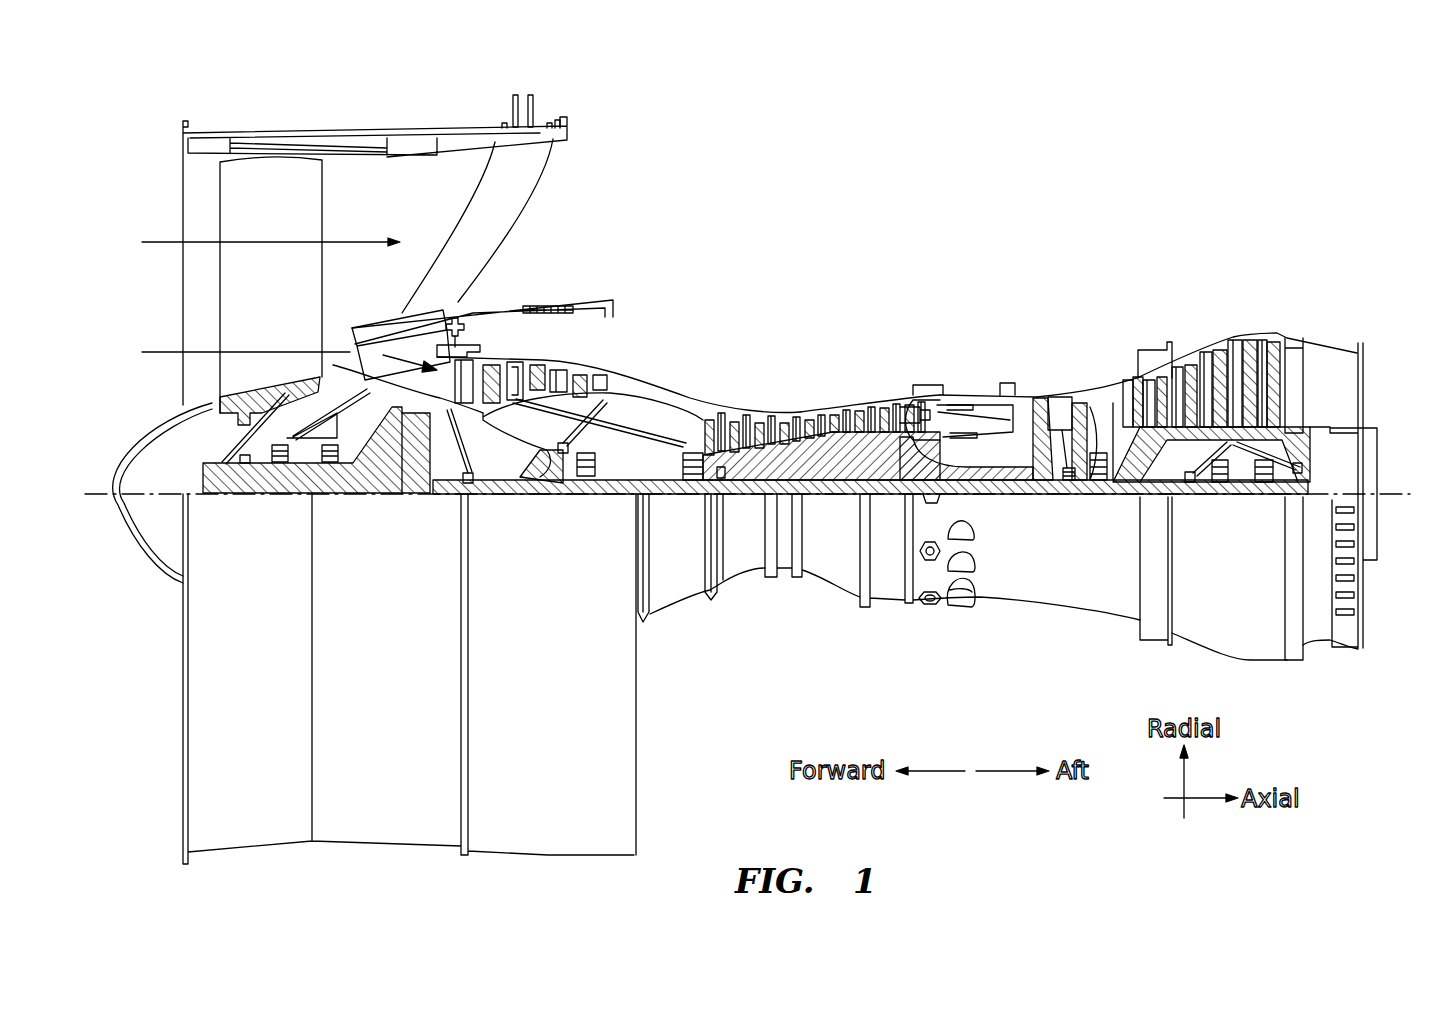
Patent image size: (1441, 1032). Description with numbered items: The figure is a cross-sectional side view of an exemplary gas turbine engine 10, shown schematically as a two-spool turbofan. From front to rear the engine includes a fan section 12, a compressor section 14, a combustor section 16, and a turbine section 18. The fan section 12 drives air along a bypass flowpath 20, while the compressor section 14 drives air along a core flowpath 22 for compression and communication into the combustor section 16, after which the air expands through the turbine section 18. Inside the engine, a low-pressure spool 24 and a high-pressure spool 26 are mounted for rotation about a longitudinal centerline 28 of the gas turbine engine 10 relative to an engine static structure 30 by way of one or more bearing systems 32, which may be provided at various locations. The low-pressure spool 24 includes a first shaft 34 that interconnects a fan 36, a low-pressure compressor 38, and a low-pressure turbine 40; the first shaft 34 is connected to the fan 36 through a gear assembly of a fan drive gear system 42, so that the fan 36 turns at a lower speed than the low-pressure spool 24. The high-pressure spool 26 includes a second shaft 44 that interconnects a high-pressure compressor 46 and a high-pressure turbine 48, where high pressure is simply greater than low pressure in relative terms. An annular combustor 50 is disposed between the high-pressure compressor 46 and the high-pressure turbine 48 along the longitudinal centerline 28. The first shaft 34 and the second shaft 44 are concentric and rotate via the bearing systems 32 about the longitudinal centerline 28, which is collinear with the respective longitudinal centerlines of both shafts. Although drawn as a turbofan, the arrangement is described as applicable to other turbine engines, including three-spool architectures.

The gas turbine engine 10 is at (759, 458).
The fan section 12 is at (463, 105).
The compressor section 14 is at (472, 262).
The combustor section 16 is at (1040, 262).
The turbine section 18 is at (1297, 262).
The bypass flowpath 20 is at (155, 240).
The core flowpath 22 is at (153, 350).
The low-pressure spool 24 is at (837, 500).
The high-pressure spool 26 is at (797, 476).
The longitudinal centerline 28 is at (1402, 485).
The engine static structure 30 is at (888, 608).
The bearing systems 32 is at (1115, 471).
The first shaft 34 is at (653, 489).
The fan 36 is at (263, 306).
The low-pressure compressor 38 is at (558, 373).
The low-pressure turbine 40 is at (1220, 333).
The fan drive gear system 42 is at (417, 506).
The second shaft 44 is at (1033, 490).
The high-pressure compressor 46 is at (798, 410).
The high-pressure turbine 48 is at (1062, 390).
The annular combustor 50 is at (977, 427).